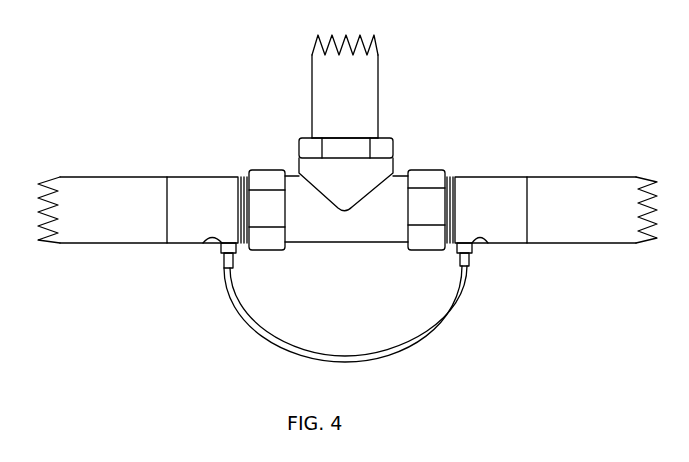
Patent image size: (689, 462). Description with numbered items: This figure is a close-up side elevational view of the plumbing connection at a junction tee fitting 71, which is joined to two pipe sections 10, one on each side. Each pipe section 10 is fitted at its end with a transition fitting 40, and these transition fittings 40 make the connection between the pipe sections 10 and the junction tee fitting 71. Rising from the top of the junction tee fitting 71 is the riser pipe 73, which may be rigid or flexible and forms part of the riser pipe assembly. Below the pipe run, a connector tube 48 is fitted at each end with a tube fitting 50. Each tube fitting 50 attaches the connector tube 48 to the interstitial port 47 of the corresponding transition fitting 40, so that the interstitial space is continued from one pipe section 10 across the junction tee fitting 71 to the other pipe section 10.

The pipe section 10 is at (100, 228).
The transition fitting 40 is at (215, 213).
The interstitial port 47 is at (213, 241).
The connector tube 48 is at (345, 358).
The tube fitting 50 is at (237, 262).
The junction tee fitting 71 is at (325, 177).
The riser pipe 73 is at (357, 100).